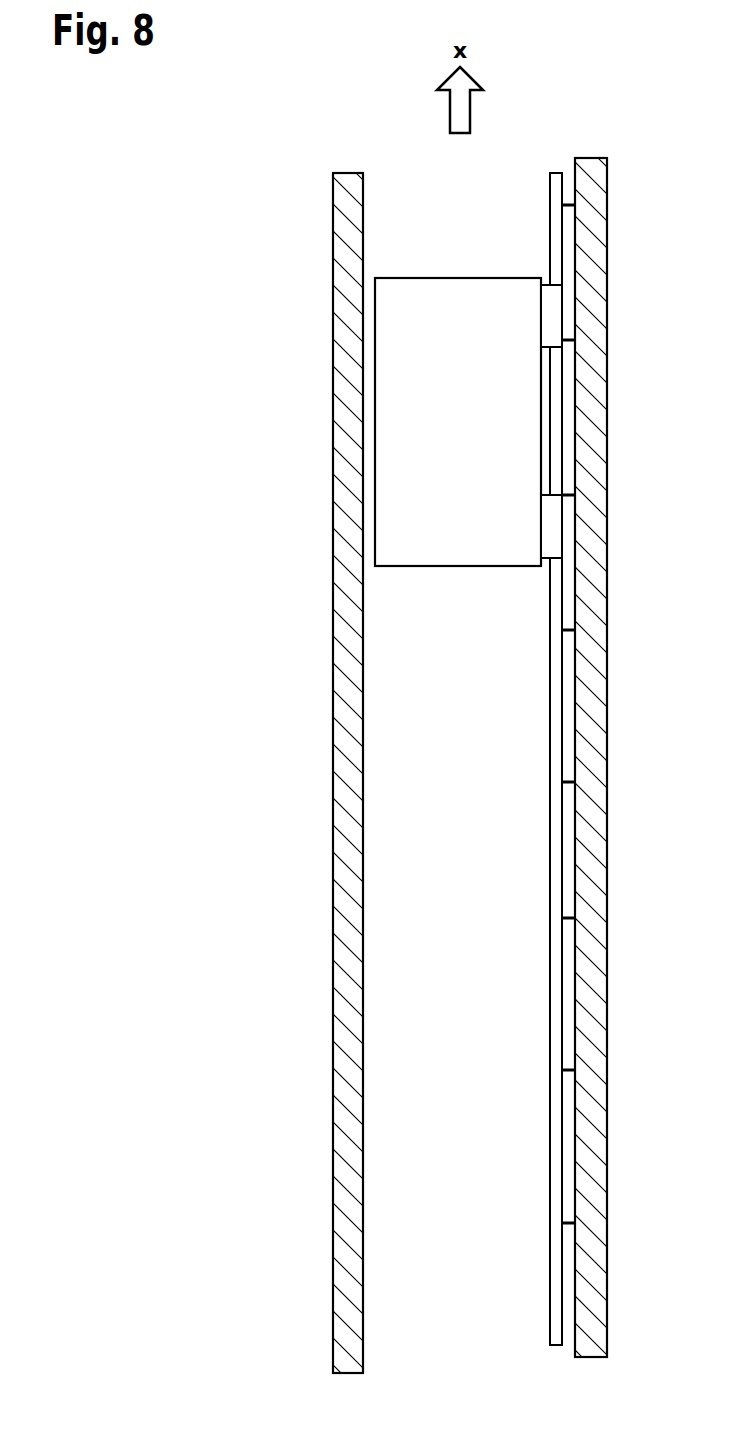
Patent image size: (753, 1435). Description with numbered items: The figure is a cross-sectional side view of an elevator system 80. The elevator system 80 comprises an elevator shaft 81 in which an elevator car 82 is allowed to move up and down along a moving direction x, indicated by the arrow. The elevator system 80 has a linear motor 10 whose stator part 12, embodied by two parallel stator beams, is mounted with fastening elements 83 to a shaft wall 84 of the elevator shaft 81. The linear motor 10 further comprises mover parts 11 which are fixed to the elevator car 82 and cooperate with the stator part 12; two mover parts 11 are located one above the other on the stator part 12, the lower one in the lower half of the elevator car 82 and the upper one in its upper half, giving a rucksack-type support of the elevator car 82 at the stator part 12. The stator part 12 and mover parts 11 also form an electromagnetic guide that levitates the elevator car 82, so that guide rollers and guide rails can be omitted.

The elevator system 80 is at (252, 209).
The elevator shaft 81 is at (488, 742).
The elevator car 82 is at (427, 297).
The fastening elements 83 is at (566, 1072).
The shaft wall 84 is at (590, 1301).
The linear motor 10 is at (526, 262).
The mover parts 11 is at (552, 313).
The stator part 12 is at (556, 975).